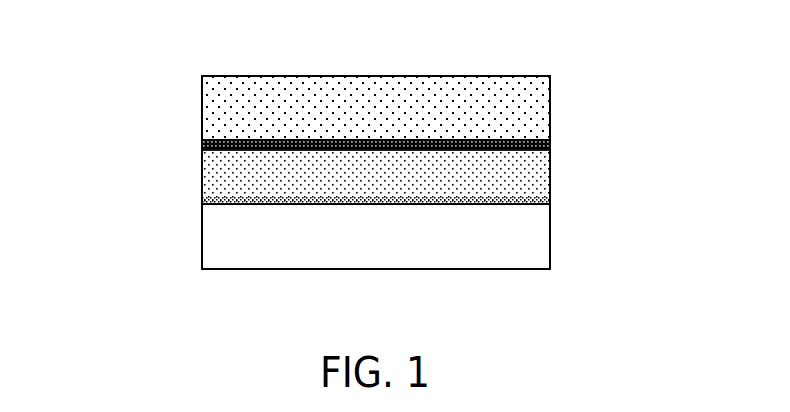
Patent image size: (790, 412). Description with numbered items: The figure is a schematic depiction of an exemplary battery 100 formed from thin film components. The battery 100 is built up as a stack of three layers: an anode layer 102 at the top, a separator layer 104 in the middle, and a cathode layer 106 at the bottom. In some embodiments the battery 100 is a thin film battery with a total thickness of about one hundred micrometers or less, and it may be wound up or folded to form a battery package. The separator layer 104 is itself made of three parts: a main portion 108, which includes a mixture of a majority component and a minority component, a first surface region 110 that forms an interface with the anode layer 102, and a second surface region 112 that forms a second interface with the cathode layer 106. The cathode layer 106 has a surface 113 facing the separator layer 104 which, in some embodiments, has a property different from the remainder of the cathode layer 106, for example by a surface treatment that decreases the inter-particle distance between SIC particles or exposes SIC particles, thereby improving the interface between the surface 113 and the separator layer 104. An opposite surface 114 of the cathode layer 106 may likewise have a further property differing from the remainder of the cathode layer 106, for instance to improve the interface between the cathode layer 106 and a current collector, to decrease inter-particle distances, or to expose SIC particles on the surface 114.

The battery 100 is at (311, 143).
The anode layer 102 is at (447, 108).
The separator layer 104 is at (447, 174).
The cathode layer 106 is at (447, 236).
The main portion 108 is at (456, 142).
The first surface region 110 is at (327, 119).
The second surface region 112 is at (334, 206).
The surface 113 is at (336, 179).
The opposite surface 114 is at (324, 270).